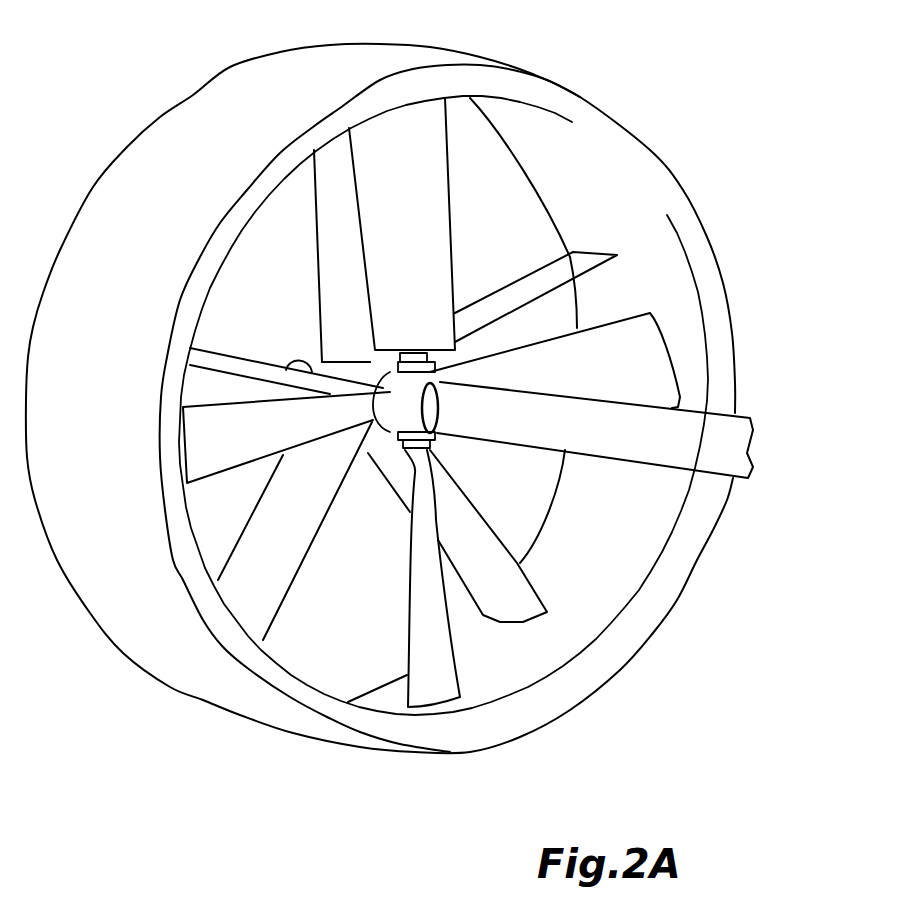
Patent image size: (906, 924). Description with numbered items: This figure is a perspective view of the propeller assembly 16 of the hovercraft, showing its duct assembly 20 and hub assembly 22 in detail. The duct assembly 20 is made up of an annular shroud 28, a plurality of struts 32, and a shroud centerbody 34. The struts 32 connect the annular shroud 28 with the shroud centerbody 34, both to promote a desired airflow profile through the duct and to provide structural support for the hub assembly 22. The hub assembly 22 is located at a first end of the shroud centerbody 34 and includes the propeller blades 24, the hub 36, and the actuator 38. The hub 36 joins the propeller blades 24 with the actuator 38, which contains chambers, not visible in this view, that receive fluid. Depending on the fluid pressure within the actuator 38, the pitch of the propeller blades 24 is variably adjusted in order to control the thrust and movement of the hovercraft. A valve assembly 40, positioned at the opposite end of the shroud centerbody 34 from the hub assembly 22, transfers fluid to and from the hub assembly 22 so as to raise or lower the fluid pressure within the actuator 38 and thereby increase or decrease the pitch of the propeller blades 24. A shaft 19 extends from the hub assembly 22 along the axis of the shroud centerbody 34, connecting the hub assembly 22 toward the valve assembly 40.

The propeller assembly 16 is at (742, 275).
The drive shaft 19 is at (741, 421).
The duct assembly 20 is at (603, 122).
The hub assembly 22 is at (545, 466).
The propeller blades 24 is at (405, 132).
The annular shroud 28 is at (182, 114).
The struts 32 is at (329, 214).
The shroud centerbody 34 is at (339, 360).
The hub 36 is at (382, 418).
The actuator 38 is at (404, 352).
The valve assembly 40 is at (288, 353).